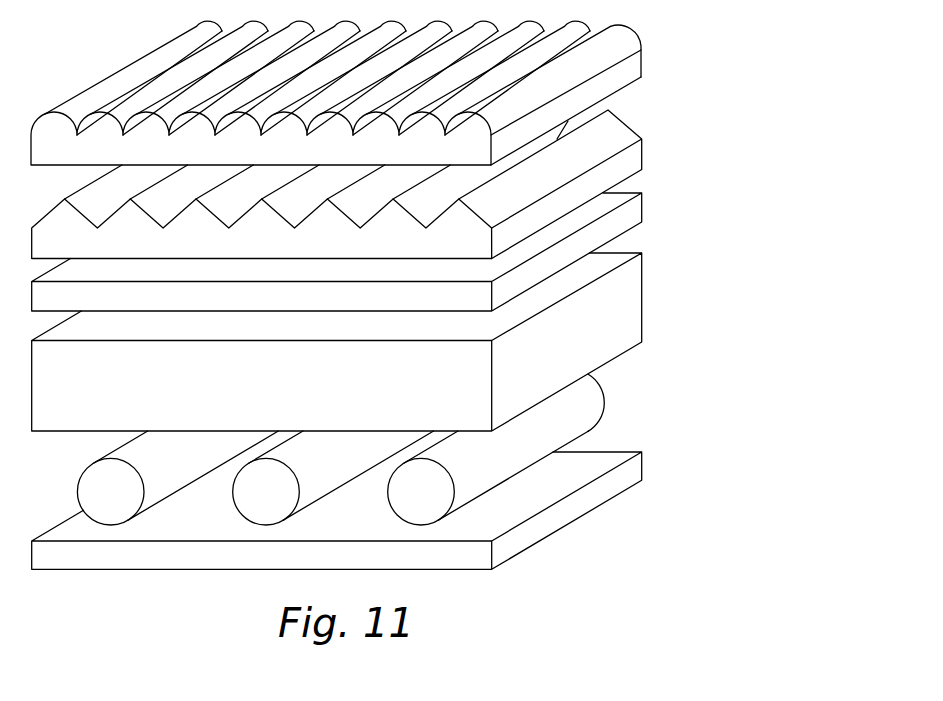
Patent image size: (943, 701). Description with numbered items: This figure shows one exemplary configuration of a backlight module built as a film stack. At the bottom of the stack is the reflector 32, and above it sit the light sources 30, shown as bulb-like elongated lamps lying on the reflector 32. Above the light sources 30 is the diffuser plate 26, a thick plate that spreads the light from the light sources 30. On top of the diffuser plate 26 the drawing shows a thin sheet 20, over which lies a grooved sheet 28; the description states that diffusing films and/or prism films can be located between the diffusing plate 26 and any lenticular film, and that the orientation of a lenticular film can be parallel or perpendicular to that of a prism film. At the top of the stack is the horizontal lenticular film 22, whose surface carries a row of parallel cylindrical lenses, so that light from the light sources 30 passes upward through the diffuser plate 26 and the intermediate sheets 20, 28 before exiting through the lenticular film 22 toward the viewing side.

The horizontal lenticular film 22 is at (643, 68).
The prism sheet 28 is at (641, 160).
The diffuser sheet 20 is at (641, 211).
The diffuser plate 26 is at (613, 315).
The light sources 30 is at (572, 417).
The reflector 32 is at (609, 497).